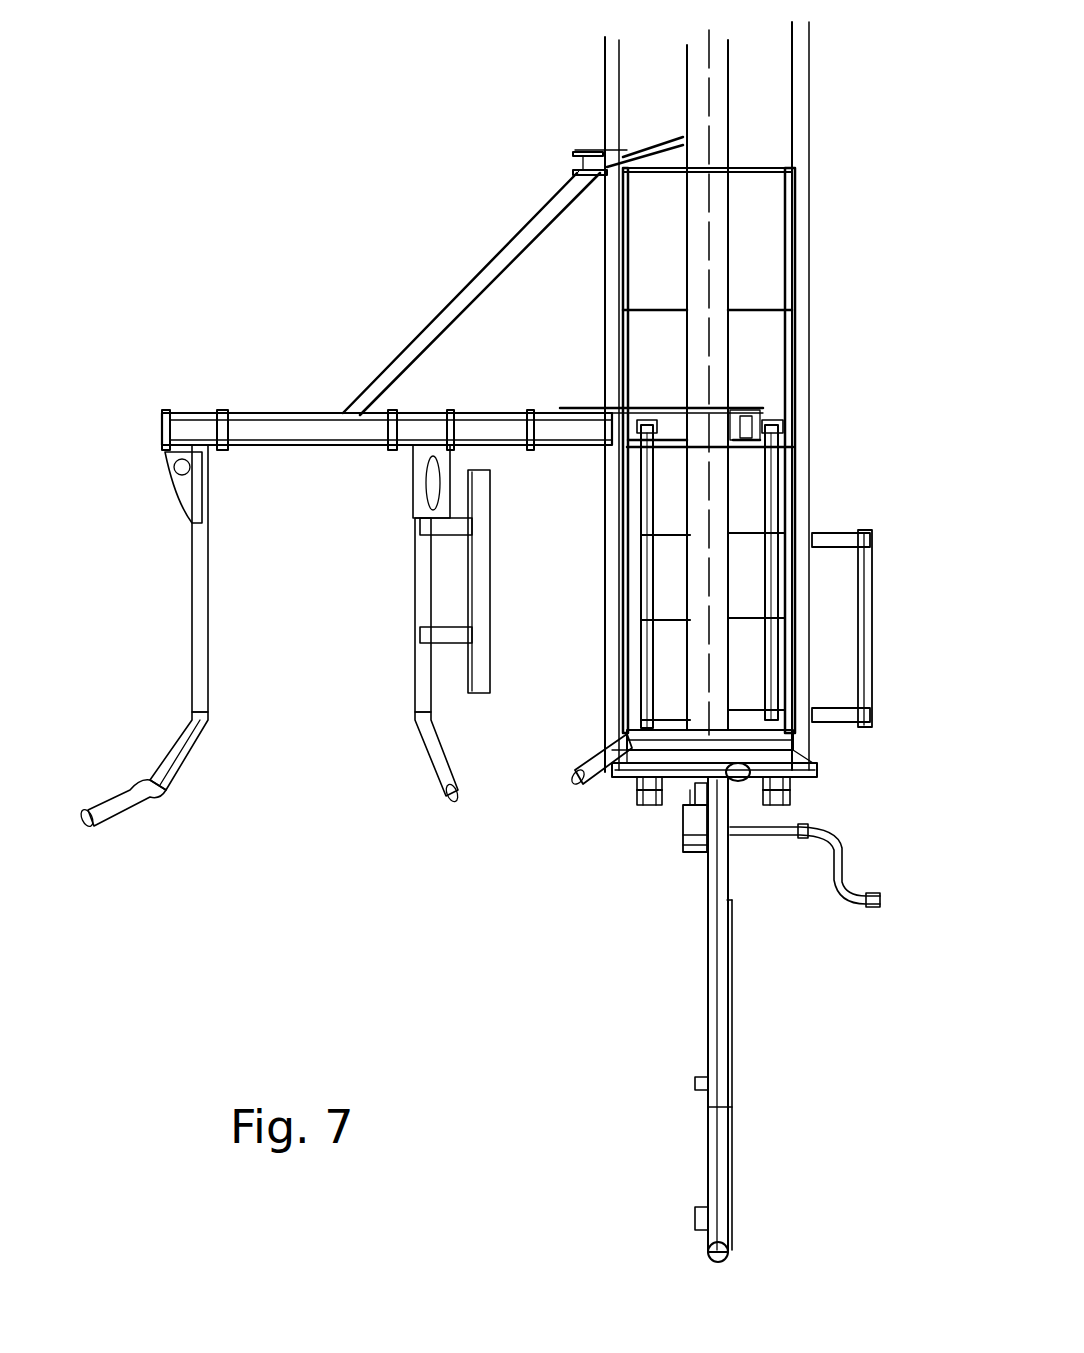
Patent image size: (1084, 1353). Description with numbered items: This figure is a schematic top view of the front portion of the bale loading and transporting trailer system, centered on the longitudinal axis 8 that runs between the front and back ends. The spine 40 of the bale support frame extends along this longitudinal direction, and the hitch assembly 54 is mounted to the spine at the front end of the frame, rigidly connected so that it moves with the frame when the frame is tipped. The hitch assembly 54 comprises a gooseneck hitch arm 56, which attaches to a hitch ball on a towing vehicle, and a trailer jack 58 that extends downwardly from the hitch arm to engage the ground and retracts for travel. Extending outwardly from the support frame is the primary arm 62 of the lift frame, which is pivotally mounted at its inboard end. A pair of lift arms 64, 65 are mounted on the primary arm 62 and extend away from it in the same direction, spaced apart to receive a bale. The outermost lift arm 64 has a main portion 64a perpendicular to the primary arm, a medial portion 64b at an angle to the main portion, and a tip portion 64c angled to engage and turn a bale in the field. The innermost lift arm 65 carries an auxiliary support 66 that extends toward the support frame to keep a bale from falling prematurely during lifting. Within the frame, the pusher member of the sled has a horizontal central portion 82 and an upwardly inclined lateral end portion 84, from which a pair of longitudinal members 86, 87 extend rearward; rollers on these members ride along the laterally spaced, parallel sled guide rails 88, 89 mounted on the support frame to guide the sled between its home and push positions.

The longitudinal axis 8 is at (707, 292).
The spine 40 is at (698, 127).
The hitch assembly 54 is at (665, 930).
The gooseneck hitch arm 56 is at (728, 952).
The trailer jack 58 is at (683, 823).
The primary arm 62 is at (278, 433).
The outermost lift arm 64 is at (184, 668).
The main portion 64a is at (203, 600).
The medial portion 64b is at (177, 763).
The tip portion 64c is at (117, 813).
The innermost lift arm 65 is at (417, 697).
The auxiliary support 66 is at (487, 562).
The central portion 82 is at (740, 740).
The lateral end portion 84 is at (587, 762).
The longitudinal member 86 is at (647, 643).
The longitudinal member 87 is at (773, 525).
The sled guide rail 88 is at (630, 237).
The sled guide rail 89 is at (790, 226).